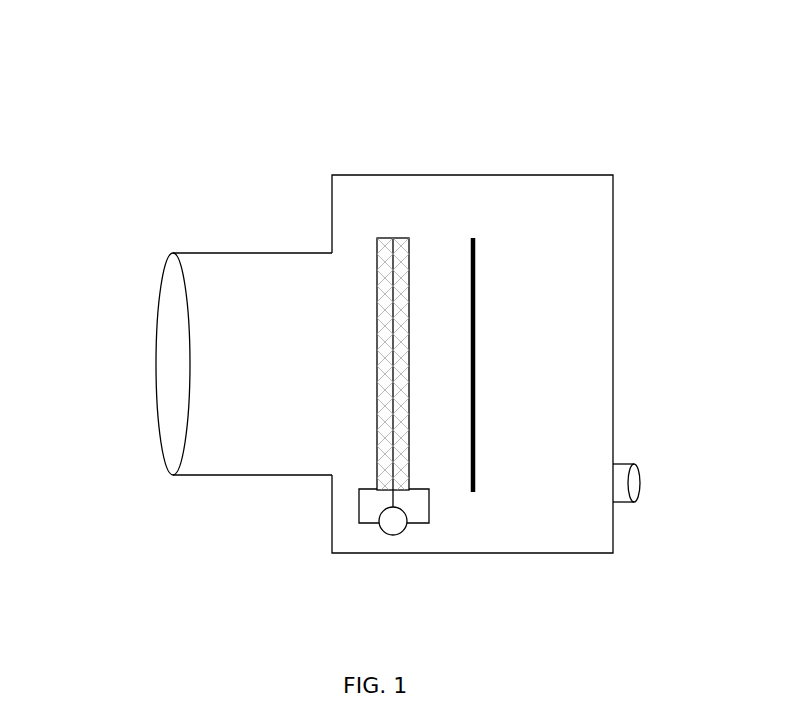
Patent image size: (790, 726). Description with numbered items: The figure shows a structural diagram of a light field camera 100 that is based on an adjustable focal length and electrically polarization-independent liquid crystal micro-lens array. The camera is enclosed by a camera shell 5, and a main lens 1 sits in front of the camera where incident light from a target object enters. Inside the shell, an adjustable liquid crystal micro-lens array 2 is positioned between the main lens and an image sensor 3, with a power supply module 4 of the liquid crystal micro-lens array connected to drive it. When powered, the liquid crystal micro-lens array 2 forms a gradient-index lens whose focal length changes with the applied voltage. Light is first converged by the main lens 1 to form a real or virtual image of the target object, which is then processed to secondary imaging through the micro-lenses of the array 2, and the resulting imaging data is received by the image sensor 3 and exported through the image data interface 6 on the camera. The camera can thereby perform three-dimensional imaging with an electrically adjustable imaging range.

The plasma treatment apparatus 100 is at (116, 86).
The main lens 1 is at (152, 365).
The adjustable liquid crystal micro-lens array 2 is at (398, 232).
The image sensor 3 is at (477, 250).
The power supply module of the liquid crystal micro-lens array 4 is at (396, 537).
The camera shell 5 is at (614, 269).
The image data interface 6 is at (641, 484).